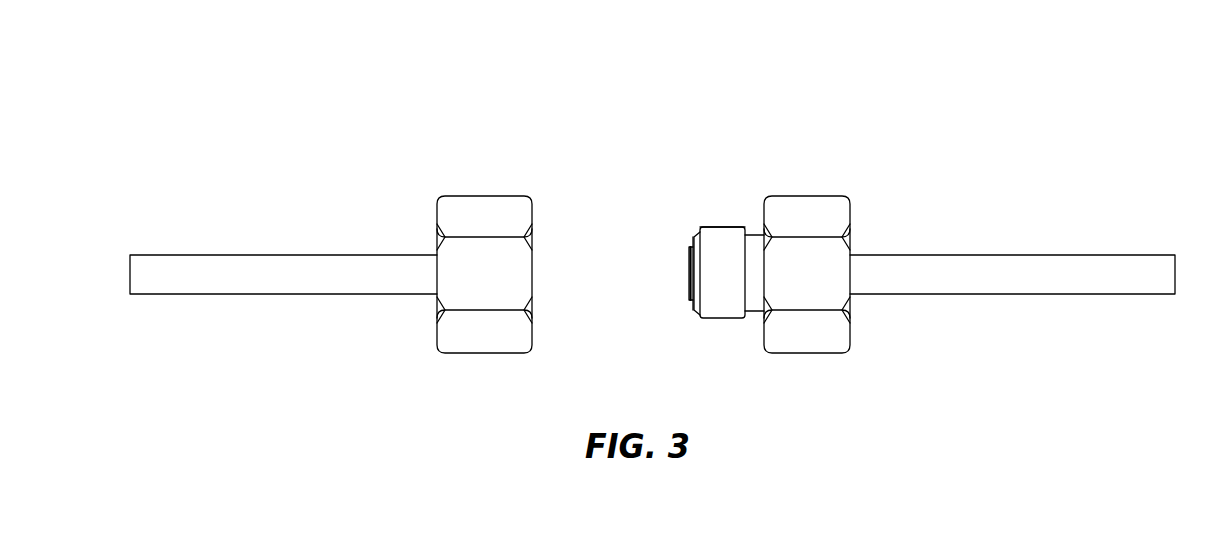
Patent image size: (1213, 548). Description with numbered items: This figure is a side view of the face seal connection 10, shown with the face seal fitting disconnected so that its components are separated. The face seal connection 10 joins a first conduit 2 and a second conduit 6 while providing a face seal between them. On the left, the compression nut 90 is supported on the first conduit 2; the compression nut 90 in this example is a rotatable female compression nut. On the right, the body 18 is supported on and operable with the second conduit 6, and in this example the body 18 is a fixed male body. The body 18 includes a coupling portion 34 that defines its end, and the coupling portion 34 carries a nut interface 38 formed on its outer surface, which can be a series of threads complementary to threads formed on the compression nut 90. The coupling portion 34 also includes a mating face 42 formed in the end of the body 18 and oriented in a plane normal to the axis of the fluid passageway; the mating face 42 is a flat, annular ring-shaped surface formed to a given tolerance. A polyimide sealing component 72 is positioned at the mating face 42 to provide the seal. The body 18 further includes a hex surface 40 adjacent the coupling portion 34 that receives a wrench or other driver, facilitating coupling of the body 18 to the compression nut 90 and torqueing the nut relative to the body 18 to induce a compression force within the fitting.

The face seal connection 10 is at (388, 133).
The first conduit 2 is at (275, 282).
The second conduit 6 is at (1072, 280).
The compression nut 90 is at (486, 353).
The body 18 is at (790, 197).
The nut interface 38 is at (722, 303).
The polyimide sealing component 72 is at (689, 249).
The mating face 42 is at (691, 308).
The coupling portion 34 is at (710, 226).
The hex surface 40 is at (808, 330).